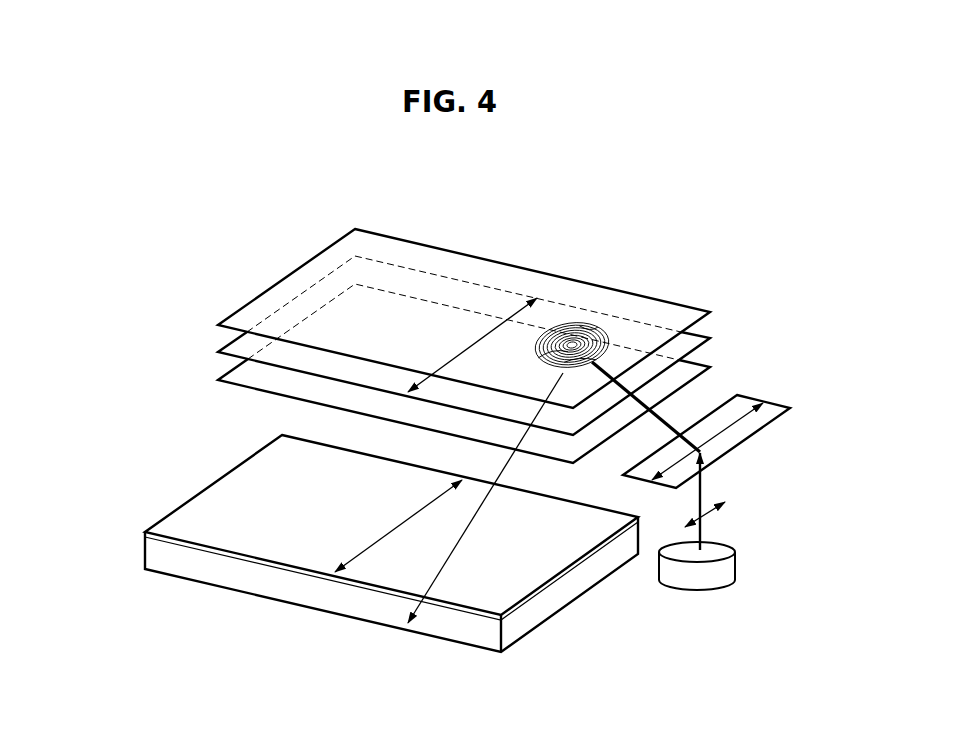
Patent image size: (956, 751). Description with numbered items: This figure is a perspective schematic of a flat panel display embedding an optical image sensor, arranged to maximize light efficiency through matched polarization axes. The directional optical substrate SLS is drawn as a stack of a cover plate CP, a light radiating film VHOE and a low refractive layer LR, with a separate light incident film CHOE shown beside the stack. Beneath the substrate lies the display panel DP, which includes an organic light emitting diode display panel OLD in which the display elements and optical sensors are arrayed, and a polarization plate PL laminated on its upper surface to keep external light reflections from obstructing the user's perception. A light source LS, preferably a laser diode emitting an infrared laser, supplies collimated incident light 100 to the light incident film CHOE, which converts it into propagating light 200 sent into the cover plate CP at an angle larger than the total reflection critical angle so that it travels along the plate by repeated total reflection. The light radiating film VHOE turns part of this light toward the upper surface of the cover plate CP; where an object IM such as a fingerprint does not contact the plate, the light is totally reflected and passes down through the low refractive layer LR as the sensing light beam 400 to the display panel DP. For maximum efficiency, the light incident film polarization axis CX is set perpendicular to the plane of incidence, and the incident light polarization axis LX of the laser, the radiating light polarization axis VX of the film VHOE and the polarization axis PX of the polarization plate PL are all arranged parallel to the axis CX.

The radiating light polarization axis VX is at (485, 337).
The object IM is at (583, 326).
The cover plate CP is at (710, 312).
The light radiating film VHOE is at (710, 338).
The low refractive layer LR is at (710, 367).
The directional optical substrate SLS is at (536, 358).
The light incident film CHOE is at (757, 433).
The light incident film polarization axis CX is at (711, 441).
The propagating light 200 is at (667, 430).
The incident light 100 is at (703, 487).
The incident light polarization axis LX is at (713, 513).
The light source LS is at (737, 563).
The sensing light beam 400 is at (508, 468).
The polarization axis of the polarization plate PX is at (347, 557).
The display panel DP is at (340, 543).
The polarization plate PL is at (143, 536).
The organic light emitting diode display panel OLD is at (152, 557).